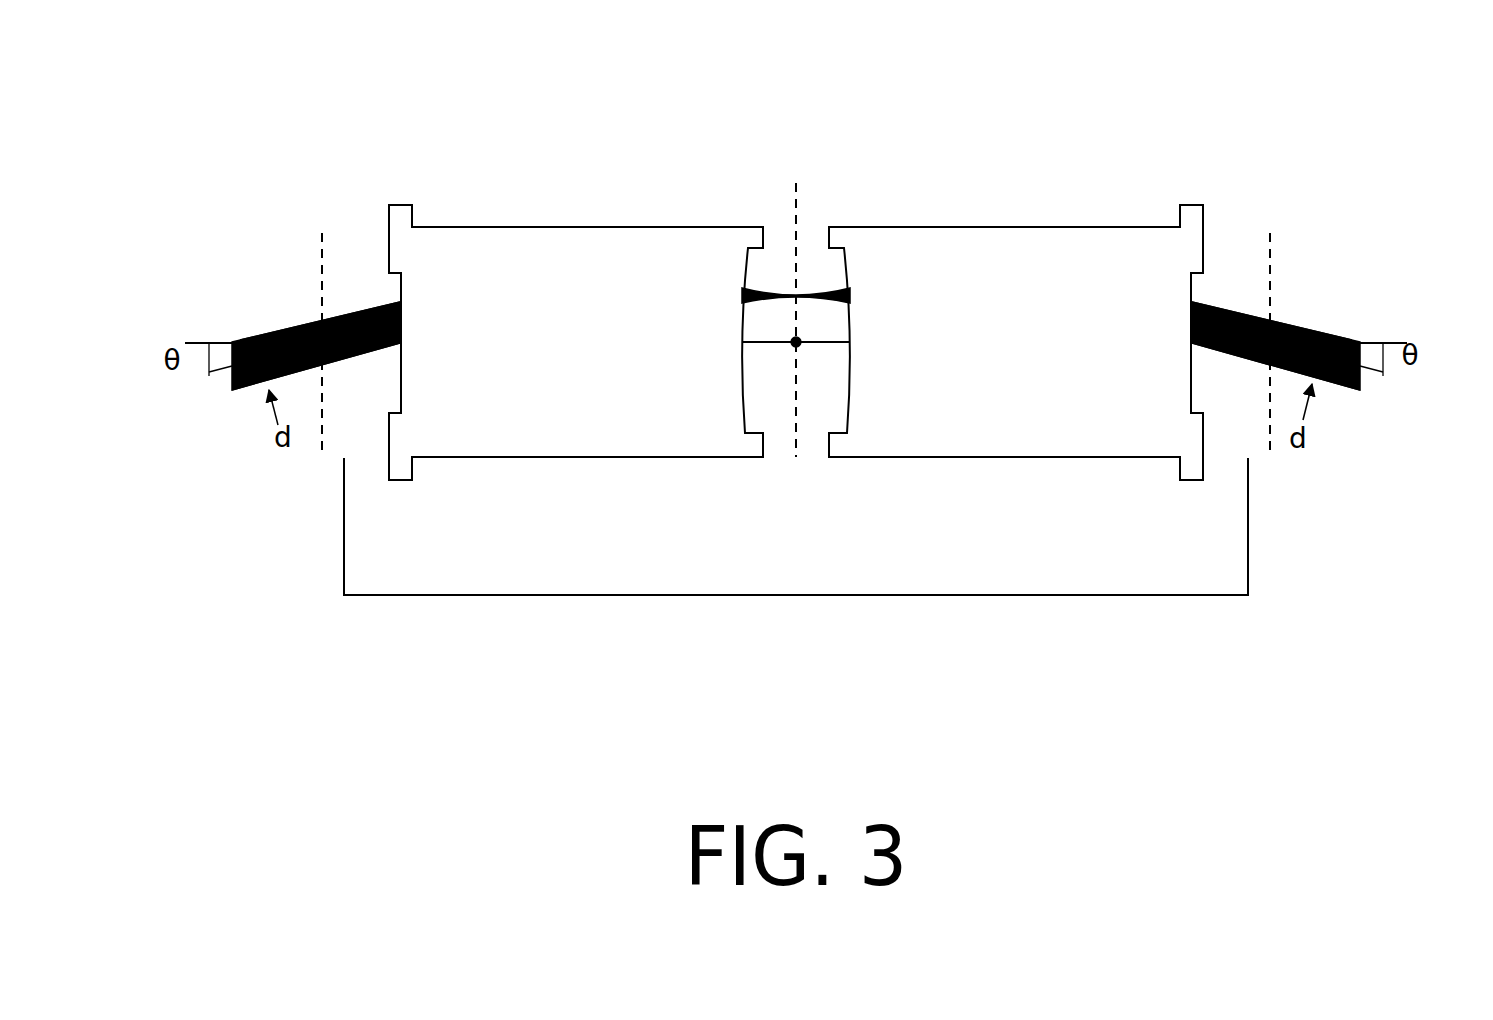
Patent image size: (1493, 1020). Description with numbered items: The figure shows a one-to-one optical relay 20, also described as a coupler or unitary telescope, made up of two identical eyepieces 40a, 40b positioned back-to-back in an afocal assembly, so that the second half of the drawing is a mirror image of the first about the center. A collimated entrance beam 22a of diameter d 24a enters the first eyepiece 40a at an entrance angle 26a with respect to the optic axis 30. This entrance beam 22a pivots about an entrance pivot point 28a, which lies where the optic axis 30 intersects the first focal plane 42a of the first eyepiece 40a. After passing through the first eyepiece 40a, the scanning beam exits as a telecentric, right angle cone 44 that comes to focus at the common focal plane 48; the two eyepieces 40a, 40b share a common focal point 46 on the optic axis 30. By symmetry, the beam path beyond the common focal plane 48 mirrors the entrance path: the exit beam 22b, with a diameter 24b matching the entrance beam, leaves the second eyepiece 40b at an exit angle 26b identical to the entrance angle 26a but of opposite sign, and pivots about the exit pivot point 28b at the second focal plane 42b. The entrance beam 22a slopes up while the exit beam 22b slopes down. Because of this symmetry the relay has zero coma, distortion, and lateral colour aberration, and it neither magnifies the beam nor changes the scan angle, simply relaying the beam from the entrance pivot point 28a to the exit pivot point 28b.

The optical relay 20 is at (762, 595).
The entrance beam 22a is at (375, 305).
The exit beam 22b is at (1218, 302).
The diameter d 24a is at (257, 334).
The diameter d 24b is at (1324, 329).
The entrance angle θ 26a is at (212, 357).
The exit angle θ 26b is at (1385, 370).
The entrance pivot point 28a is at (322, 345).
The exit pivot point 28b is at (1268, 345).
The optic axis 30 is at (203, 343).
The first eyepiece 40a is at (548, 458).
The second eyepiece 40b is at (988, 456).
The first focal plane 42a is at (322, 233).
The second focal plane 42b is at (1270, 233).
The telecentric right angle cone 44 is at (760, 290).
The common focal point 46 is at (800, 345).
The common focal plane 48 is at (796, 183).